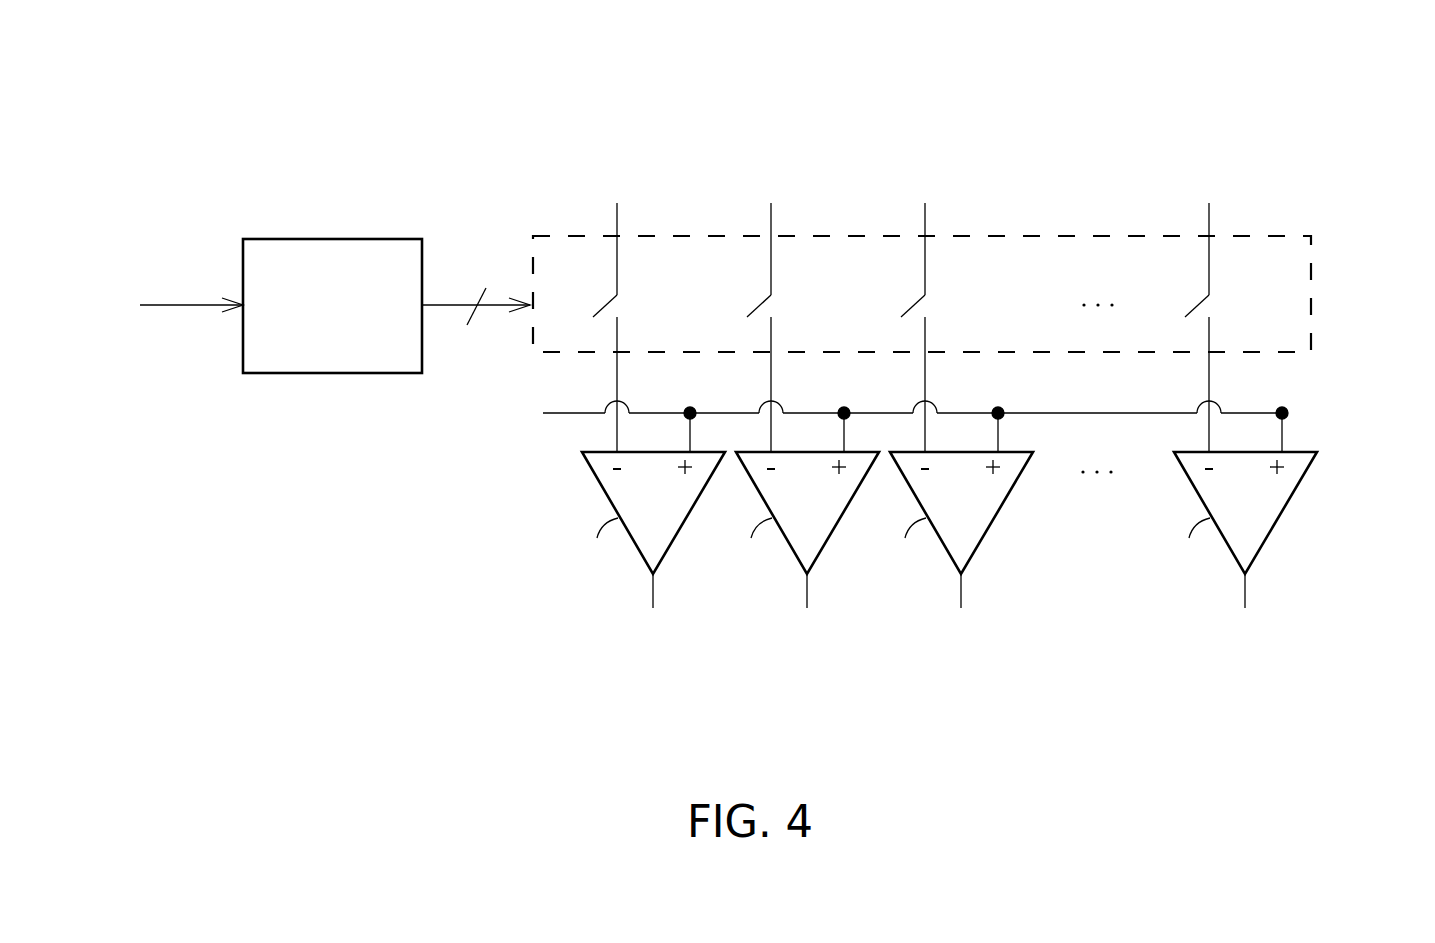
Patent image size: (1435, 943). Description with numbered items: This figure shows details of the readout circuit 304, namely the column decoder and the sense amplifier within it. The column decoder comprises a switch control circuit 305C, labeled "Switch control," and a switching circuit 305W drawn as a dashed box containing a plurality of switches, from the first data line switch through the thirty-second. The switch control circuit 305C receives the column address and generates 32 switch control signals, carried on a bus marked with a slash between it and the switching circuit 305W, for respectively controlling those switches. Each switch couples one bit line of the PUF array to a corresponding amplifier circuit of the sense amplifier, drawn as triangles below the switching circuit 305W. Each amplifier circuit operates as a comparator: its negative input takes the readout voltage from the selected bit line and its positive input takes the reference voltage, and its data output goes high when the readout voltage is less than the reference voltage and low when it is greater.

The readout circuit 304 is at (1078, 62).
The switch control circuit 305C is at (331, 239).
The switching circuit 305W is at (1312, 278).
The 32-bit control bus 32 is at (476, 294).